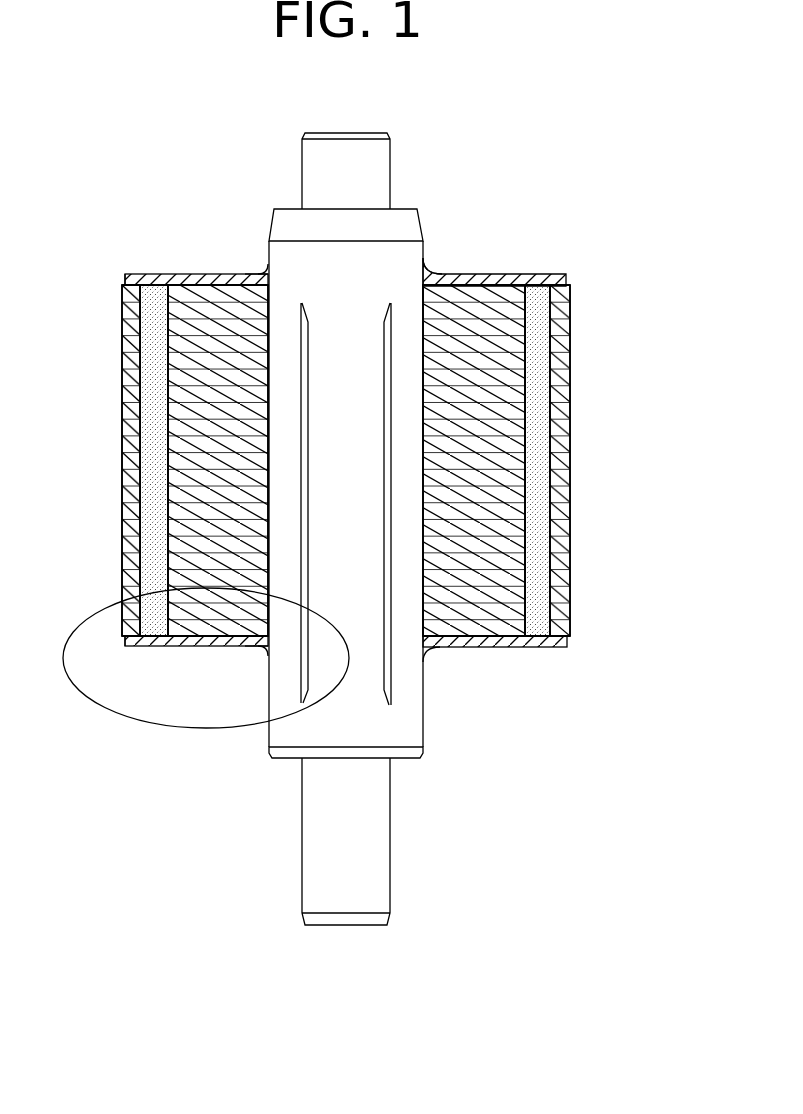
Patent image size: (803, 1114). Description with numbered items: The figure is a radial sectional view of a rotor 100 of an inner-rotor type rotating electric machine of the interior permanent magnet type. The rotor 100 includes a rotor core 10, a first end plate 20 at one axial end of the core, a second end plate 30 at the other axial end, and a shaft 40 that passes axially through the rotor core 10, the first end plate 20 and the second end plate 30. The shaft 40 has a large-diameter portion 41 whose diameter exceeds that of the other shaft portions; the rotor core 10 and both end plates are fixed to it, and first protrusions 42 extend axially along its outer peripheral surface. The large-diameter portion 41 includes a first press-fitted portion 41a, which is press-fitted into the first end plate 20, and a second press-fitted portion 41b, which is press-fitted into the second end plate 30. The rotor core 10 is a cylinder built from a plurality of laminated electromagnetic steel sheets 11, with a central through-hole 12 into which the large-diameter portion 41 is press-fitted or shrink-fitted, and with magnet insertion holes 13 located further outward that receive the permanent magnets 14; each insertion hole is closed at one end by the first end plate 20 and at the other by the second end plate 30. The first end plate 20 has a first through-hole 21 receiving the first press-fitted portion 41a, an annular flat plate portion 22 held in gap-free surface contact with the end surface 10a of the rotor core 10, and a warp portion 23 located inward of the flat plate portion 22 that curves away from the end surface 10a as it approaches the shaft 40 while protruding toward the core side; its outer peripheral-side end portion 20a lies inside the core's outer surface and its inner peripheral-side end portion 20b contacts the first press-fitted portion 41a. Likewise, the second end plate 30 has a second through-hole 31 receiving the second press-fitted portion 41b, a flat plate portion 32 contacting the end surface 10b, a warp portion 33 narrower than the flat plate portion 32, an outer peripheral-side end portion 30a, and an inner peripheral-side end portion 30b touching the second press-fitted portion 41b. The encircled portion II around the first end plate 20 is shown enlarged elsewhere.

The rotor 100 is at (196, 147).
The rotor core 10 is at (182, 364).
The end surface 10a is at (212, 637).
The end surface 10b is at (210, 285).
The electromagnetic steel sheets 11 is at (132, 296).
The through-hole 12 is at (262, 425).
The magnet insertion holes 13 is at (540, 416).
The permanent magnets 14 is at (537, 449).
The first end plate 20 is at (567, 640).
The outer peripheral-side end portion 20a is at (128, 640).
The inner peripheral-side end portion 20b is at (268, 655).
The first through-hole 21 is at (428, 652).
The flat plate portion 22 is at (180, 646).
The warp portion 23 is at (265, 646).
The second end plate 30 is at (567, 280).
The outer peripheral-side end portion 30a is at (128, 274).
The inner peripheral-side end portion 30b is at (266, 272).
The second through-hole 31 is at (424, 258).
The flat plate portion 32 is at (178, 276).
The warp portion 33 is at (258, 276).
The shaft 40 is at (373, 170).
The large-diameter portion 41 is at (403, 574).
The first press-fitted portion 41a is at (424, 680).
The second press-fitted portion 41b is at (385, 250).
The first protrusions 42 is at (392, 523).
The portion II is at (154, 735).